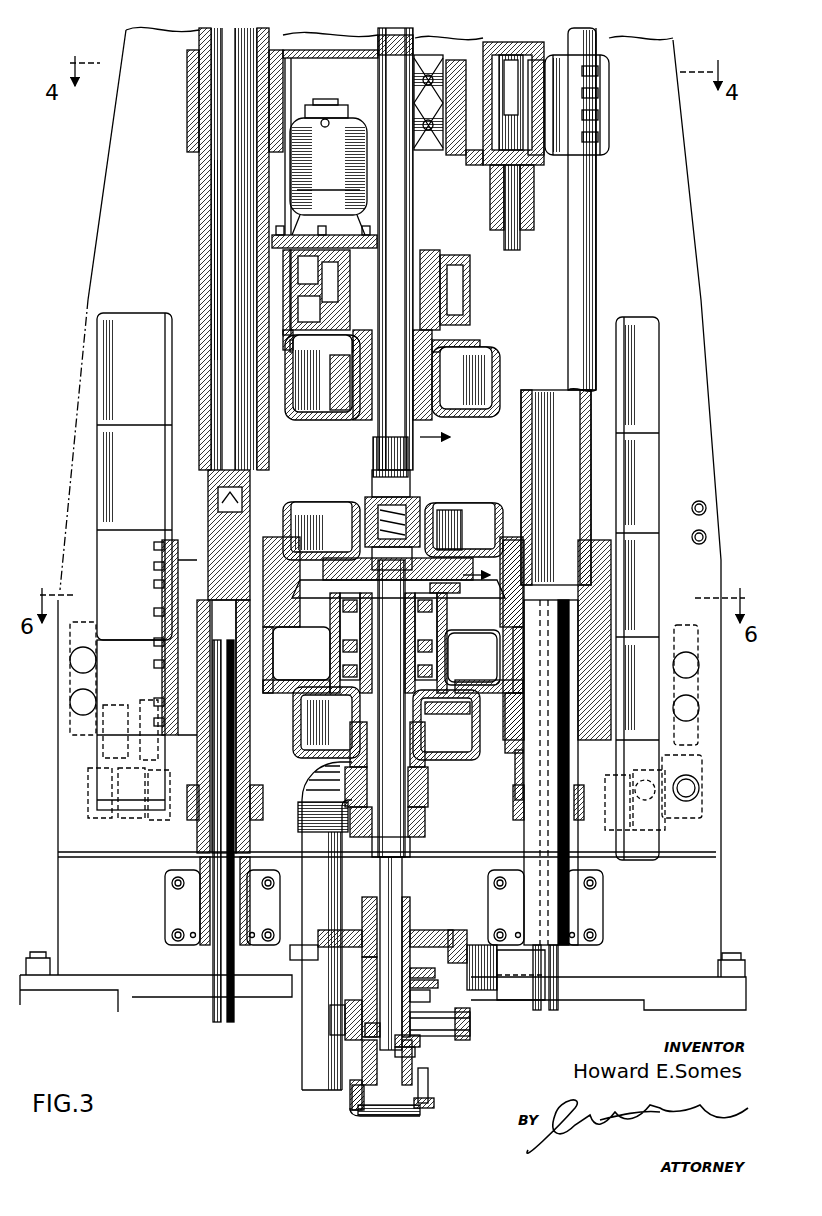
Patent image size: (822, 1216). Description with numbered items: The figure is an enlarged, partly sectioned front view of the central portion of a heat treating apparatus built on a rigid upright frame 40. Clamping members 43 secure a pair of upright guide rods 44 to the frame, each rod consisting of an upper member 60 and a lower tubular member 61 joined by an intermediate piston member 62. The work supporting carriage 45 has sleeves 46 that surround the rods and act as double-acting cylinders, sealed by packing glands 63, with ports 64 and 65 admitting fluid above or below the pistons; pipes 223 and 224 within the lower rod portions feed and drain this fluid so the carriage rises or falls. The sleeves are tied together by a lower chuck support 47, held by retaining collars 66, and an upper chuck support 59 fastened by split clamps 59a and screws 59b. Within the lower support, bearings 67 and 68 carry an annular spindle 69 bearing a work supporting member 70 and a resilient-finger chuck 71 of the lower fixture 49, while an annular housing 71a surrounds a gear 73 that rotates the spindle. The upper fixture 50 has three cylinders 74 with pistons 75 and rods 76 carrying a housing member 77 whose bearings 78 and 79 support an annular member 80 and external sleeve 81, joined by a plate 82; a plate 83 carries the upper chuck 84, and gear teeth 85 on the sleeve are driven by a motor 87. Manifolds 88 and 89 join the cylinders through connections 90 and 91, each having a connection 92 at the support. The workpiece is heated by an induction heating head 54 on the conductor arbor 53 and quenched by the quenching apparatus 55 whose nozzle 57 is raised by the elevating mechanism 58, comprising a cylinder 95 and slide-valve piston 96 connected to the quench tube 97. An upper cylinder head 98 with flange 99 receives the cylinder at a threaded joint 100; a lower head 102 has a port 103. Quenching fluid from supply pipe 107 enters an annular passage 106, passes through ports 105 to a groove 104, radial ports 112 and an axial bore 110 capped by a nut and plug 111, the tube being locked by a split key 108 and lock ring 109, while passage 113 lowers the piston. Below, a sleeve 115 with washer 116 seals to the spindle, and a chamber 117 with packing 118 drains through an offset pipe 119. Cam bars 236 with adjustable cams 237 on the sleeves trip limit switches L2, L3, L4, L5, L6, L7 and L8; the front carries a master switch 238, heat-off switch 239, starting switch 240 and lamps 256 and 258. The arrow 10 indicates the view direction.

The upright frame 40 is at (692, 200).
The end clamping members 43 is at (167, 930).
The carriage guide rods 44 is at (212, 201).
The work supporting carriage 45 is at (600, 258).
The carriage sleeves 46 is at (200, 228).
The lower chuck support 47 is at (482, 640).
The lower chuck fixture 49 is at (487, 505).
The upper chuck fixture 50 is at (278, 271).
The electrical conductor arbor 53 is at (415, 37).
The induction heating head 54 is at (421, 482).
The quenching apparatus 55 is at (404, 888).
The nozzle 57 is at (427, 540).
The elevating and retracting mechanism 58 is at (357, 1112).
The upper chuck support 59 is at (323, 50).
The split clamps 59a is at (609, 95).
The screws 59b is at (603, 142).
The upper member 60 is at (215, 247).
The lower tubular member 61 is at (252, 841).
The piston member 62 is at (610, 598).
The packing glands 63 is at (264, 790).
The ports 64 is at (273, 602).
The ports 65 is at (274, 658).
The retaining collars 66 is at (520, 755).
The antifriction bearing 67 is at (448, 636).
The antifriction bearing 68 is at (440, 675).
The annular spindle 69 is at (343, 662).
The annular work supporting member 70 is at (450, 580).
The annular chuck 71 is at (337, 500).
The annular housing 71a is at (296, 726).
The gear 73 is at (446, 725).
The vertical cylinders 74 is at (532, 121).
The pistons 75 is at (508, 125).
The rods 76 is at (498, 188).
The annular housing member 77 is at (485, 245).
The antifriction bearing 78 is at (300, 282).
The antifriction bearing 79 is at (322, 298).
The annular member 80 is at (428, 282).
The external sleeve 81 is at (300, 316).
The plate 82 is at (470, 275).
The plate 83 is at (291, 390).
The upper chuck 84 is at (340, 380).
The gear teeth 85 is at (290, 345).
The motor 87 is at (348, 128).
The manifold 88 is at (445, 135).
The manifold 89 is at (458, 58).
The connection 90 is at (490, 50).
The connection 91 is at (478, 160).
The connection 92 is at (208, 592).
The fluid pressure cylinder 95 is at (362, 1070).
The piston 96 is at (364, 985).
The quench head supporting tube 97 is at (406, 852).
The upper cylinder head 98 is at (412, 922).
The flange 99 is at (362, 958).
The threaded connection 100 is at (421, 1044).
The lower cylinder head 102 is at (375, 1117).
The port 103 is at (432, 1094).
The central annular groove 104 is at (345, 1026).
The ports 105 is at (345, 1010).
The internal annular passage 106 is at (450, 1027).
The quenching fluid supply pipe 107 is at (482, 1031).
The split key 108 is at (421, 1000).
The threaded lock ring 109 is at (428, 973).
The central axial bore 110 is at (364, 1037).
The packing retaining nut and plug 111 is at (358, 1087).
The radial ports 112 is at (425, 1052).
The fluid passage 113 is at (434, 988).
The upstanding sleeve 115 is at (421, 745).
The fluid-tight washer 116 is at (413, 718).
The chamber 117 is at (410, 795).
The water-tight packing 118 is at (402, 812).
The offset drain pipe 119 is at (332, 906).
The direction arrow 10 is at (467, 513).
The pipes 223 is at (216, 1023).
The pipes 224 is at (232, 1023).
The cam carrying bars 236 is at (651, 401).
The adjustable cams 237 is at (134, 561).
The master safety on and off switch 238 is at (70, 666).
The safety heat-off switch 239 is at (70, 706).
The master starting switch 240 is at (699, 793).
The lamp 256 is at (707, 538).
The signal lamp 258 is at (707, 508).
The limit switch L2 is at (622, 814).
The limit switch L3 is at (652, 812).
The limit switch L4 is at (94, 810).
The limit switch L5 is at (167, 811).
The limit switch L6 is at (145, 722).
The limit switch L7 is at (115, 719).
The limit switch L8 is at (131, 812).